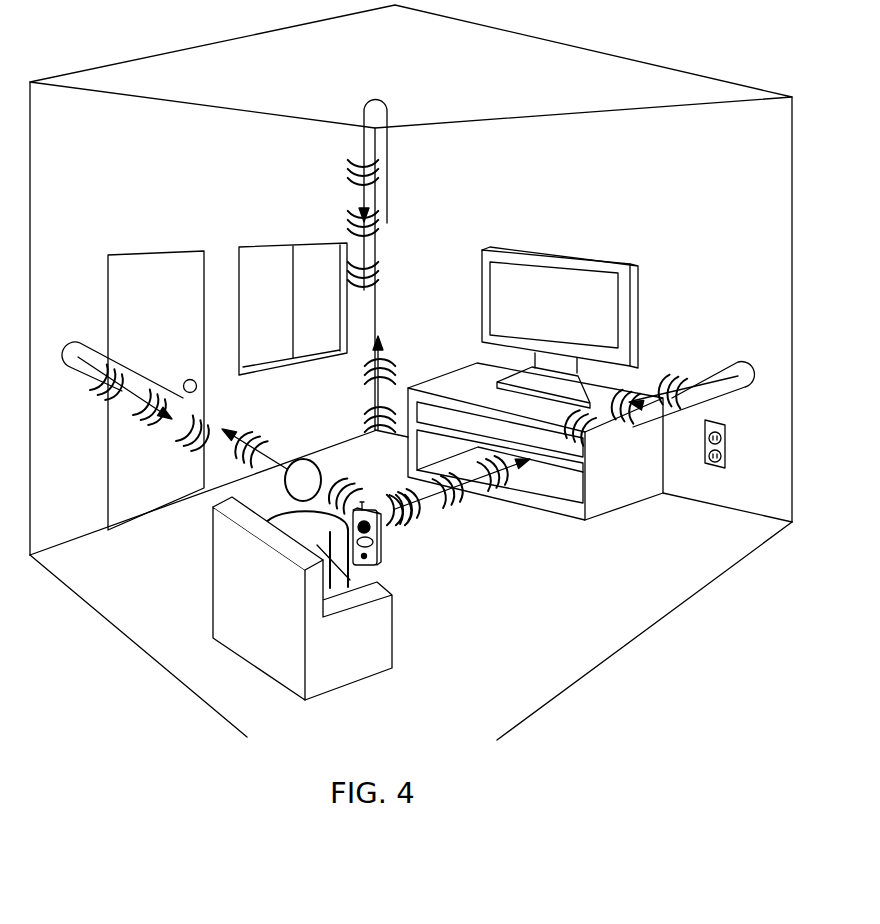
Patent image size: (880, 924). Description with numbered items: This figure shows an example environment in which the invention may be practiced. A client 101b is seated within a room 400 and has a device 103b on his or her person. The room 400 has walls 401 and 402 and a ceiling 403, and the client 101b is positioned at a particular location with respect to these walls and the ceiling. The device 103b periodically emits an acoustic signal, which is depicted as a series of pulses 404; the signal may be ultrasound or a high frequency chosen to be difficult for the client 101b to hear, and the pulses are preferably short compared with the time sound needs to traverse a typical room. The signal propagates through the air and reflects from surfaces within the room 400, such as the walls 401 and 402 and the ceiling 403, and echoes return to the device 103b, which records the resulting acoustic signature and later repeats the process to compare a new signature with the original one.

The room 400 is at (133, 163).
The wall 401 is at (285, 198).
The wall 402 is at (608, 210).
The ceiling 403 is at (478, 93).
The pulses 404 is at (465, 494).
The client 101b is at (352, 578).
The device 103b is at (383, 556).